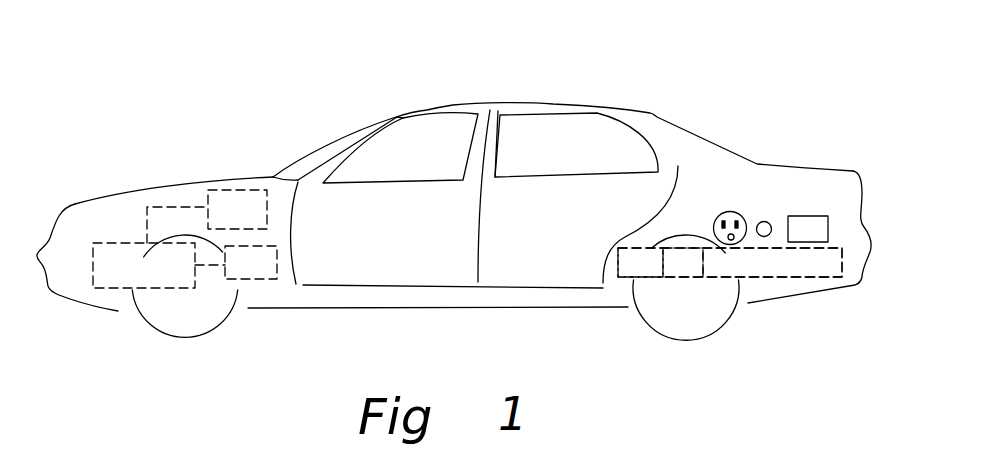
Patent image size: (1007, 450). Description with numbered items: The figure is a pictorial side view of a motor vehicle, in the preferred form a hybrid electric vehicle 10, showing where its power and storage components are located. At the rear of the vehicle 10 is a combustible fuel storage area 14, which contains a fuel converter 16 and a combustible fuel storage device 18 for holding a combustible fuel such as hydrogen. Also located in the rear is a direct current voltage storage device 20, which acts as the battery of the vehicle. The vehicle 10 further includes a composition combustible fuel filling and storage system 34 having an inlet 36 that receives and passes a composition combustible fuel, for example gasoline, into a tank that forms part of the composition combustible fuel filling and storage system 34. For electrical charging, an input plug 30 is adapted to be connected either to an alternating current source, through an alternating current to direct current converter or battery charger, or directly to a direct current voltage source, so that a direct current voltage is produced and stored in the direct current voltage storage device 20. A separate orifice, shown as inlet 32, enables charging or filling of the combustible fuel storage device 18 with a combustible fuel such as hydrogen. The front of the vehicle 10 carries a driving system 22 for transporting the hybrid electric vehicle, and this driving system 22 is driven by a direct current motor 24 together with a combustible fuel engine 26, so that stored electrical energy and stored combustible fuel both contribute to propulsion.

The hybrid electric vehicle 10 is at (623, 91).
The combustible fuel storage area 14 is at (643, 248).
The fuel converter 16 is at (641, 267).
The combustible fuel storage device 18 is at (686, 272).
The direct current voltage storage device 20 is at (800, 277).
The driving system 22 is at (123, 288).
The direct current motor 24 is at (238, 190).
The combustible fuel engine 26 is at (267, 287).
The input plug 30 is at (737, 212).
The inlet 32 is at (767, 222).
The composition combustible fuel filling and storage system 34 is at (808, 214).
The inlet 36 is at (797, 231).